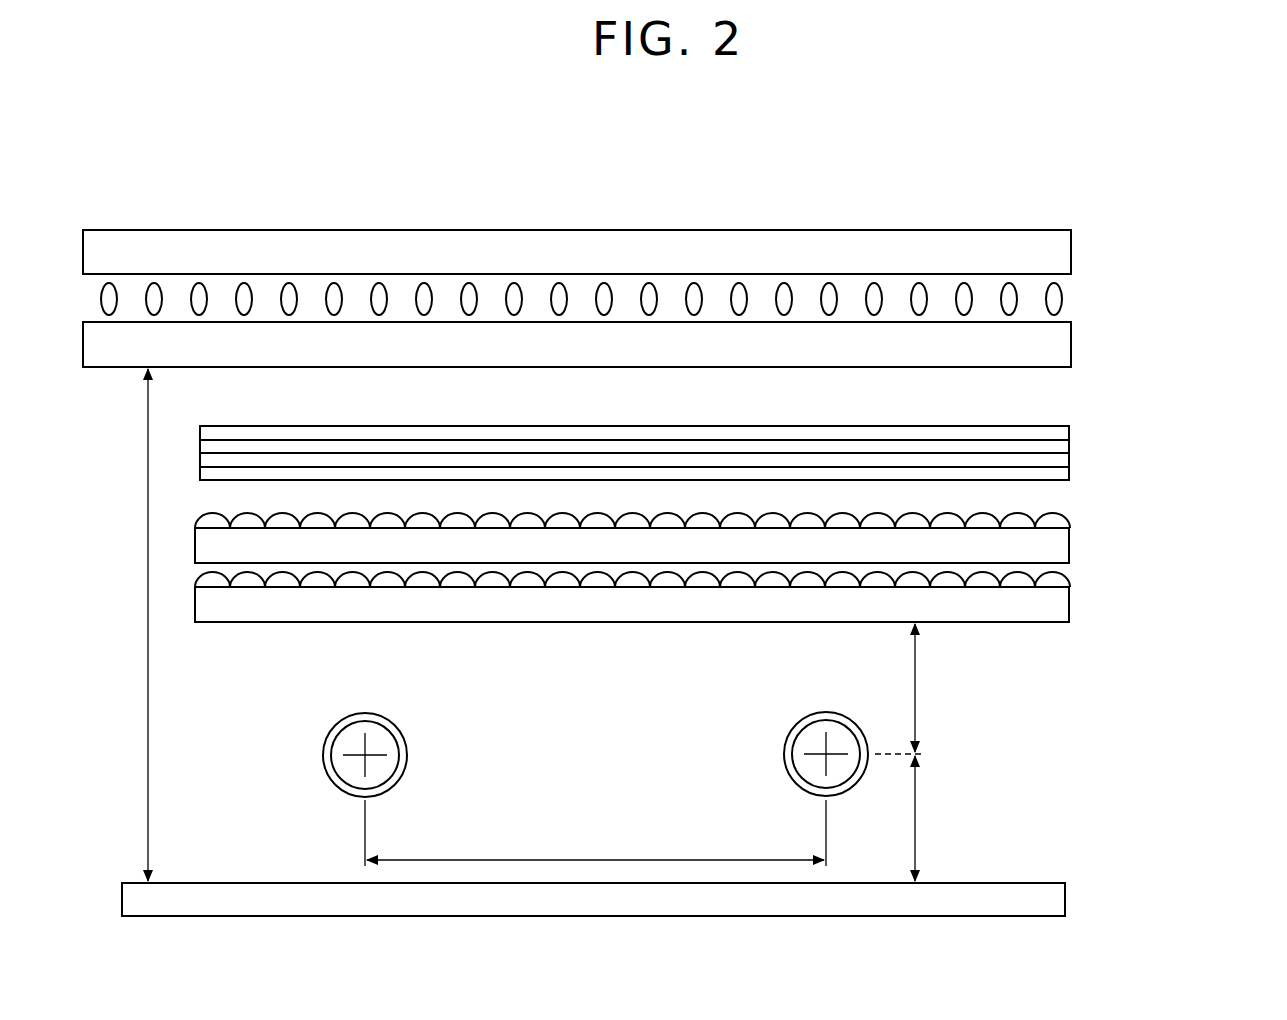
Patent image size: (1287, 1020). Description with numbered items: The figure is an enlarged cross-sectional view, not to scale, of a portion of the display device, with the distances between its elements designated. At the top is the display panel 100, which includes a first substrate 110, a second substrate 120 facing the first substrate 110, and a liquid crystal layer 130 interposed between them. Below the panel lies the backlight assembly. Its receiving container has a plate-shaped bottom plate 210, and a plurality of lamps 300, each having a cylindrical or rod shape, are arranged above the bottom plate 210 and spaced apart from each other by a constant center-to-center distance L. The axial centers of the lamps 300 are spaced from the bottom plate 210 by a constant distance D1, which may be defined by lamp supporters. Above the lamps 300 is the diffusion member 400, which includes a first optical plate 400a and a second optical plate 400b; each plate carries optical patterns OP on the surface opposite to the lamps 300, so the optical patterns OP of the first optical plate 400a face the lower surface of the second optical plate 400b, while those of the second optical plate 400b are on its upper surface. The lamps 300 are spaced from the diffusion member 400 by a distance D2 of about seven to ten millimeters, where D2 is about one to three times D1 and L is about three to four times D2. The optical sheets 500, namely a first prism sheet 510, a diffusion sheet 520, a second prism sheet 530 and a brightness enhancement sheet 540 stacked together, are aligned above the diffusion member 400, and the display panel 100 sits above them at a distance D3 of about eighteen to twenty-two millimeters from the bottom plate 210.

The display panel 100 is at (669, 298).
The first substrate 110 is at (635, 344).
The second substrate 120 is at (1058, 250).
The liquid crystal layer 130 is at (1070, 297).
The bottom plate 210 is at (1050, 900).
The lamps 300 is at (788, 726).
The diffusion member 400 is at (731, 575).
The first optical plate 400a is at (1078, 602).
The second optical plate 400b is at (1078, 545).
The optical patterns OP is at (1062, 514).
The optical sheets 500 is at (721, 451).
The first prism sheet 510 is at (1062, 471).
The diffusion sheet 520 is at (1062, 457).
The second prism sheet 530 is at (1062, 444).
The brightness enhancement sheet 540 is at (1062, 430).
The distance between bottom plate and lamps D1 is at (936, 818).
The distance between lamps and diffusion member D2 is at (916, 689).
The distance between bottom plate and display panel D3 is at (128, 625).
The center-to-center distance between lamps L is at (595, 833).